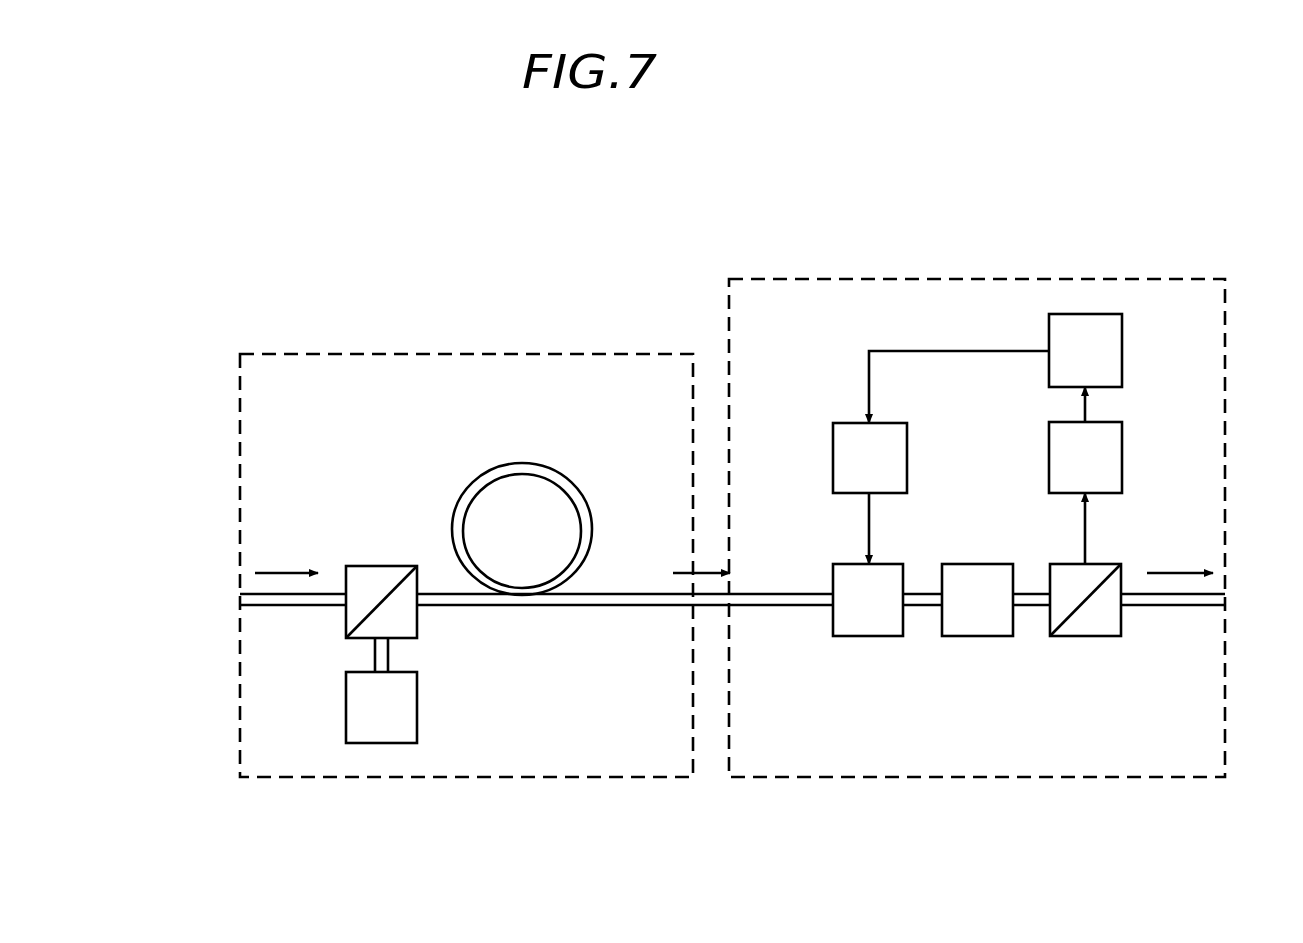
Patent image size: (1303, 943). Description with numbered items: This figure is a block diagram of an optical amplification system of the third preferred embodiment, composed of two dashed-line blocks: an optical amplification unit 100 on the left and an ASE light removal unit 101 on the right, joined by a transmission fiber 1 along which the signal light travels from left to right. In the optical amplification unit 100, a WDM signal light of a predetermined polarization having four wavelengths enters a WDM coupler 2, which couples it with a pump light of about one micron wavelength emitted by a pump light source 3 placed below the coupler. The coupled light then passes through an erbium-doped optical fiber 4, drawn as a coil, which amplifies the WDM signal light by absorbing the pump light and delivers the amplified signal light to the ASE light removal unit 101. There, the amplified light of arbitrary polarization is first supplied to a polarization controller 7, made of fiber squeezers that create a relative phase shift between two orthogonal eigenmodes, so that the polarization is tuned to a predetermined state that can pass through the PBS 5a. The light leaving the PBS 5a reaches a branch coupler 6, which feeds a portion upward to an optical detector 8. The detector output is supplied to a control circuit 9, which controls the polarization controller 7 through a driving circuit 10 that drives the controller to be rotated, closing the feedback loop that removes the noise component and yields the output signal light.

The optical fiber 1 is at (302, 605).
The WDM coupler 2 is at (378, 574).
The pump light source 3 is at (403, 705).
The Er-doped optical fiber 4 is at (528, 467).
The PBS 5a is at (965, 625).
The branch coupler 6 is at (1078, 628).
The polarization controller 7 is at (857, 629).
The optical detector 8 is at (1110, 455).
The control circuit 9 is at (1107, 345).
The driving circuit 10 is at (848, 432).
The optical amplification unit 100 is at (437, 777).
The ASE light removal unit 101 is at (1033, 777).